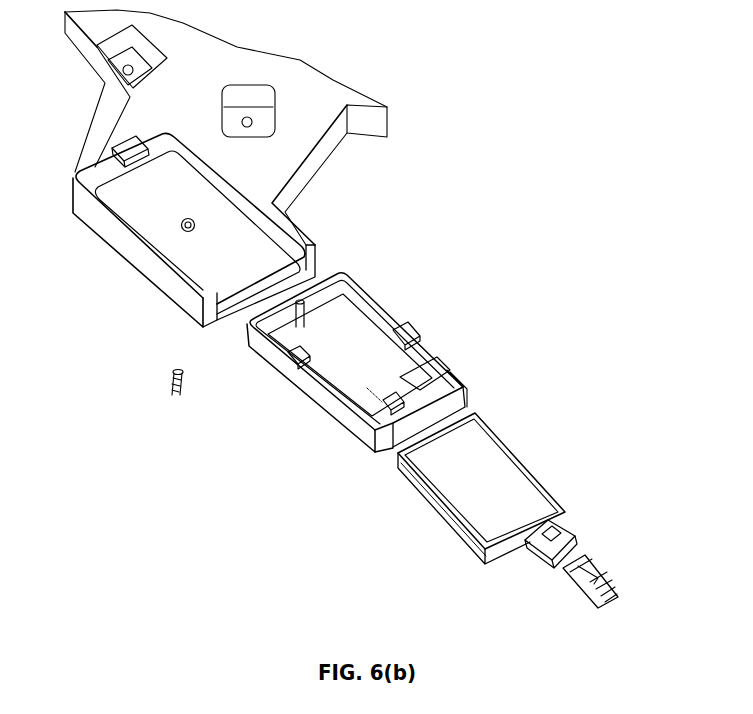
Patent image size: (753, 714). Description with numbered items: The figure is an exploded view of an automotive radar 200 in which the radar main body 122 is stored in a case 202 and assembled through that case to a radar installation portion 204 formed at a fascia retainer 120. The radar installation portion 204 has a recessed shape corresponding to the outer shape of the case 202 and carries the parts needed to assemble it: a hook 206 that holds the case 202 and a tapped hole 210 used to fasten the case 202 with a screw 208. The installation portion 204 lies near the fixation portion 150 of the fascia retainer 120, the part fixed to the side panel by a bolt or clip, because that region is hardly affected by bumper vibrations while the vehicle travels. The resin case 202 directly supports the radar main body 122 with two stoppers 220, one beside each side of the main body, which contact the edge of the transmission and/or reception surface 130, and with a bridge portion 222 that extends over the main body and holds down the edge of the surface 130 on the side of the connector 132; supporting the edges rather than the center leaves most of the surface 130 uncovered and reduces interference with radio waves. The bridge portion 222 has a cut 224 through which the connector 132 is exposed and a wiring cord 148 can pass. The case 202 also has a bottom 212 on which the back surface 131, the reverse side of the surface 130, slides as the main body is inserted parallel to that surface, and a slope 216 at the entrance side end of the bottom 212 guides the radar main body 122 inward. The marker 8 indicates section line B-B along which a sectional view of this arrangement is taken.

The fascia retainer 120 is at (201, 73).
The fixation portion 150 is at (268, 120).
The automotive radar 200 is at (360, 243).
The radar installation portion 204 is at (143, 225).
The hook 206 is at (113, 146).
The tapped hole 210 is at (186, 217).
The screw 208 is at (181, 325).
The bottom 212 is at (315, 383).
The stoppers 220 is at (304, 361).
The case 202 is at (397, 320).
The bridge portion 222 is at (447, 366).
The cut 224 is at (432, 398).
The insertion direction 8 is at (368, 387).
The slope 216 is at (388, 455).
The radar main body 122 is at (547, 486).
The transmission and/or reception surface 130 is at (475, 490).
The back surface 131 is at (454, 533).
The connector 132 is at (574, 526).
The wiring cord 148 is at (617, 583).